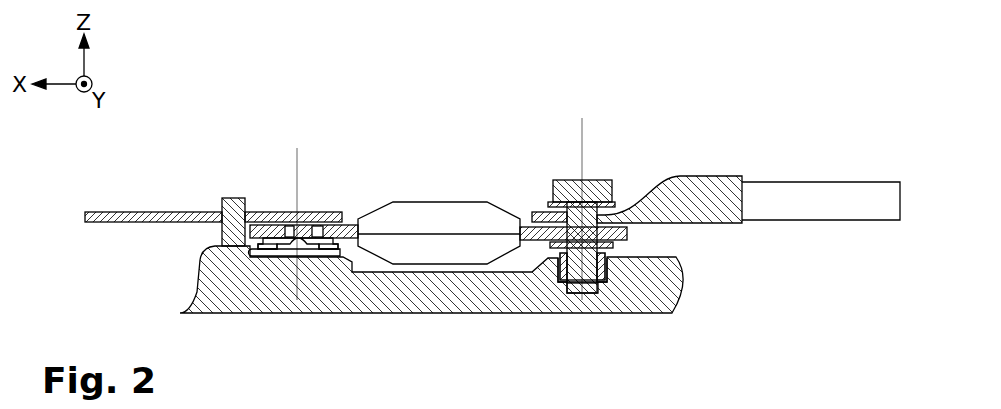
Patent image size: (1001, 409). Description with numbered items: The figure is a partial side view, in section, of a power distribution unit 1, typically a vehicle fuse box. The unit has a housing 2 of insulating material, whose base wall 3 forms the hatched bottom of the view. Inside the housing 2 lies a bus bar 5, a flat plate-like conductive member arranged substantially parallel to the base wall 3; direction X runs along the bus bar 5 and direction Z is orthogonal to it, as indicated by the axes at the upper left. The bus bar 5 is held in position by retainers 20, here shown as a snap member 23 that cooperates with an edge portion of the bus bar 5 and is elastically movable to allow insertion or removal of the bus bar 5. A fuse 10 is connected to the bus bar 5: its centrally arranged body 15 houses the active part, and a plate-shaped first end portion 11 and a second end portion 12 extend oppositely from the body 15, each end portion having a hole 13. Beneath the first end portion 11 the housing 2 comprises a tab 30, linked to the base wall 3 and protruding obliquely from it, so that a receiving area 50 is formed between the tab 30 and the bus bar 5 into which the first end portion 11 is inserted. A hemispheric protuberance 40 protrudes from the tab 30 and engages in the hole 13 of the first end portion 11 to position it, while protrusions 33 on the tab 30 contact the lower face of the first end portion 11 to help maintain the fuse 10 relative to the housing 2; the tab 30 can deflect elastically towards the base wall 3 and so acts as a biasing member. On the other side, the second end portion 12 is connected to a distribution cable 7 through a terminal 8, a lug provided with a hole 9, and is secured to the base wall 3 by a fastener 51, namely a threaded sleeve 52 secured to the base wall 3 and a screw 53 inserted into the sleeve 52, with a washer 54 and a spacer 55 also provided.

The power distribution unit 1 is at (708, 309).
The housing 2 is at (474, 300).
The base wall 3 is at (431, 279).
The bus bar 5 is at (153, 212).
The distribution cable 7 is at (842, 205).
The terminal 8 is at (715, 200).
The hole 9 is at (512, 211).
The fuse 10 is at (473, 188).
The first end portion 11 is at (325, 238).
The second end portion 12 is at (530, 241).
The hole 13 is at (291, 238).
The body 15 is at (422, 228).
The retainer 20 is at (161, 241).
The snap member 23 is at (222, 230).
The tab 30 is at (334, 252).
The protrusion 33 is at (268, 249).
The protuberance 40 is at (298, 240).
The receiving area 50 is at (356, 214).
The fastener 51 is at (613, 170).
The threaded sleeve 52 is at (560, 264).
The screw 53 is at (577, 268).
The washer 54 is at (536, 203).
The spacer 55 is at (614, 246).